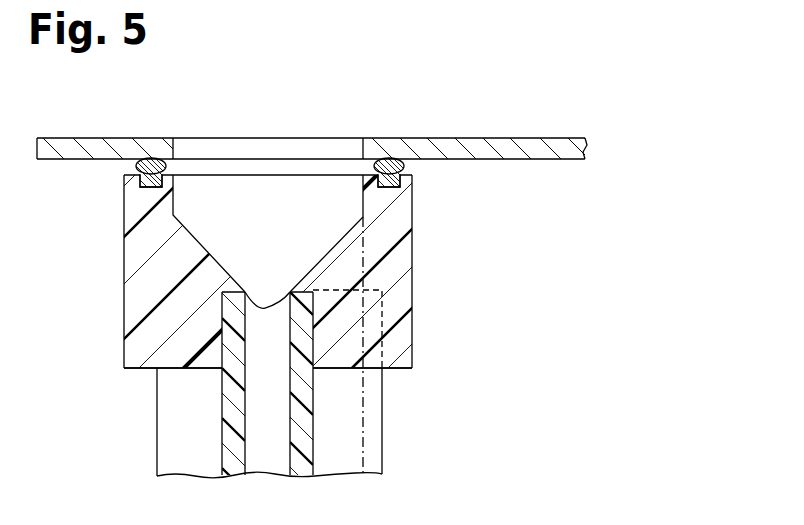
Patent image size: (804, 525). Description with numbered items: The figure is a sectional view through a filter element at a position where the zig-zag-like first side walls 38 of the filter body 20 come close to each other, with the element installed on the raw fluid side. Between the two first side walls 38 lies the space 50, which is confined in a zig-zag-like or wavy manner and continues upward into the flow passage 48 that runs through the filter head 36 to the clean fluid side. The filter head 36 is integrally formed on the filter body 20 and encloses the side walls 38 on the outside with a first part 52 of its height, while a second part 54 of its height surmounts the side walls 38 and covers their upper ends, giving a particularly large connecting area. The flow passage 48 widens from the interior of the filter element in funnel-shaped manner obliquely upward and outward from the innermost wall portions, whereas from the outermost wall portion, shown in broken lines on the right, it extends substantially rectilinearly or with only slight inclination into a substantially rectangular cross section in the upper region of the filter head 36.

The filter body 20 is at (412, 431).
The filter head 36 is at (462, 230).
The first side walls 38 is at (196, 431).
The flow passage 48 is at (273, 185).
The space 50 is at (282, 406).
The first part of the height of the filter head 52 is at (118, 292).
The second part of the height of the filter head 54 is at (118, 175).